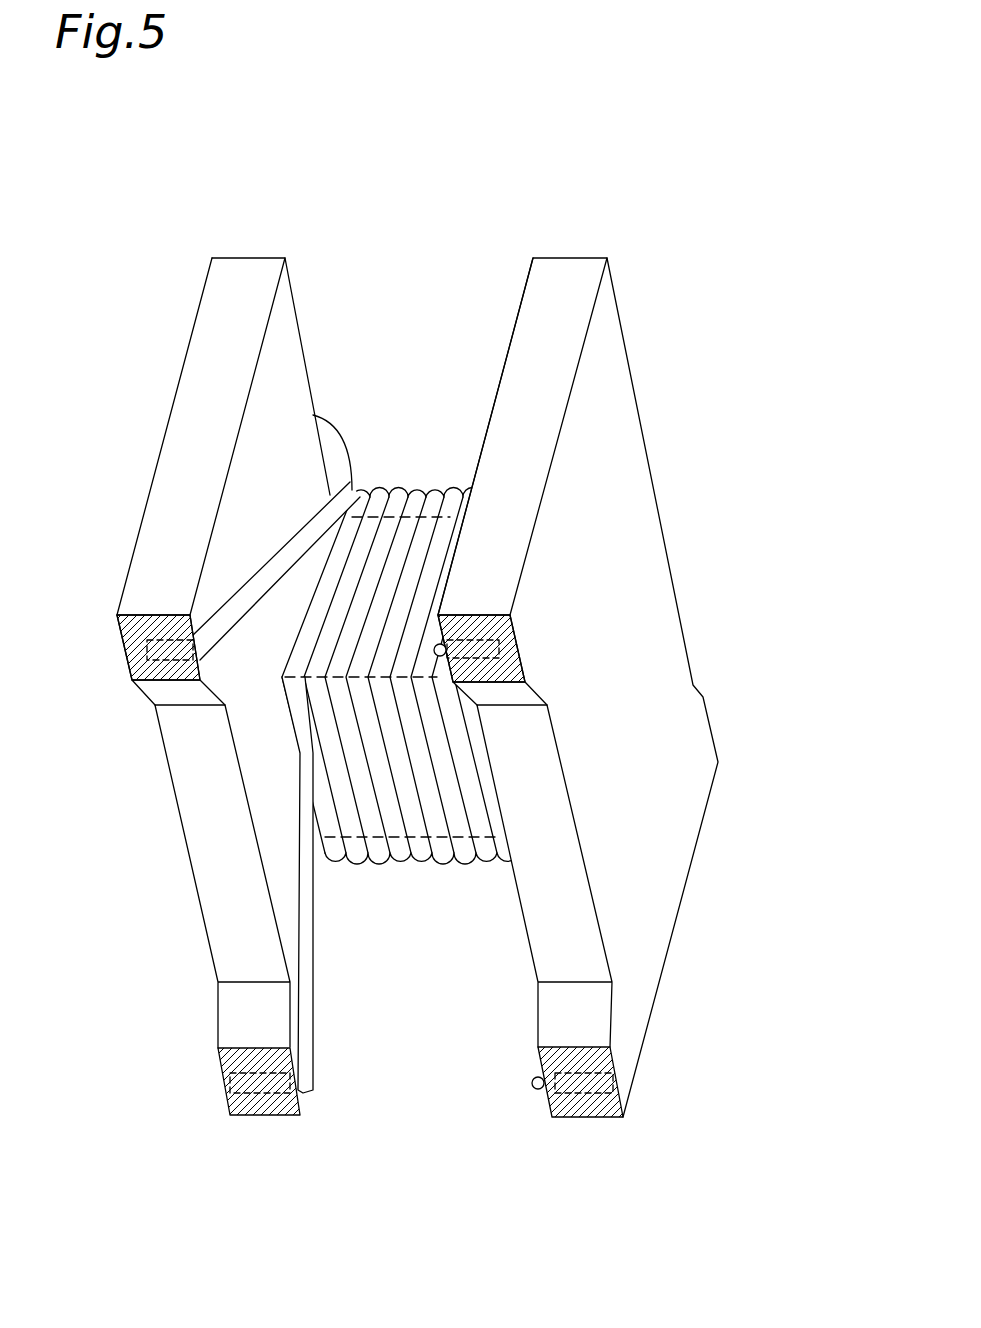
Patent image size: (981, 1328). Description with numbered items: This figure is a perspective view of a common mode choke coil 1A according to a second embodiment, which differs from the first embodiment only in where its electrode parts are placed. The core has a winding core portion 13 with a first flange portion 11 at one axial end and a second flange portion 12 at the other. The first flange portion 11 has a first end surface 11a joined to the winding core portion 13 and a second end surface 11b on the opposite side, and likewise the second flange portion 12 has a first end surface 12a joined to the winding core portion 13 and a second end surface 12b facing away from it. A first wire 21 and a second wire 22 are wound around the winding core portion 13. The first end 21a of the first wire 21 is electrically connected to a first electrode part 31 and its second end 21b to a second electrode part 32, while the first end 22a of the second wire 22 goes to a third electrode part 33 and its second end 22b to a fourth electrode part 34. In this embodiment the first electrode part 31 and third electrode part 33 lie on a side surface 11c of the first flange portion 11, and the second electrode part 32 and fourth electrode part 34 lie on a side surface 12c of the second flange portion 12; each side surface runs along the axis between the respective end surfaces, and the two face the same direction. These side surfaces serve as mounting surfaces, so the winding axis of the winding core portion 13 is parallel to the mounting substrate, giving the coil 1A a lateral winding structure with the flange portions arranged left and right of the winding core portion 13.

The common mode choke coil 1A is at (405, 160).
The first flange portion 11 is at (203, 694).
The first end surface 11a is at (283, 322).
The second end surface 11b is at (162, 433).
The side surface 11c is at (190, 765).
The second flange portion 12 is at (639, 694).
The first end surface 12a is at (515, 323).
The second end surface 12b is at (607, 427).
The side surface 12c is at (537, 764).
The winding core portion 13 is at (449, 498).
The first wire 21 is at (293, 540).
The first end of the first wire 21a is at (150, 652).
The second end of the first wire 21b is at (523, 657).
The second wire 22 is at (305, 826).
The first end of the second wire 22a is at (225, 1082).
The second end of the second wire 22b is at (613, 1082).
The first electrode part 31 is at (152, 640).
The second electrode part 32 is at (512, 630).
The third electrode part 33 is at (262, 1118).
The fourth electrode part 34 is at (580, 1118).